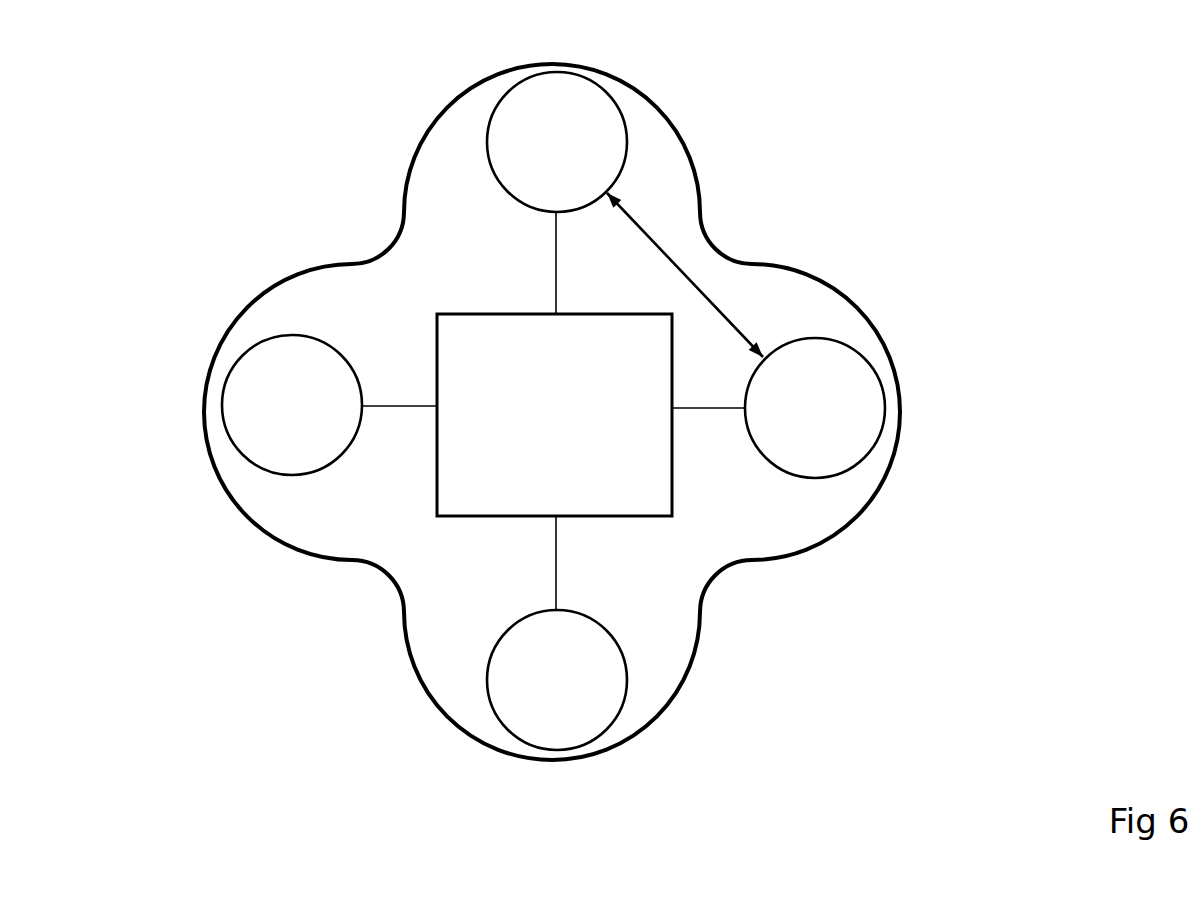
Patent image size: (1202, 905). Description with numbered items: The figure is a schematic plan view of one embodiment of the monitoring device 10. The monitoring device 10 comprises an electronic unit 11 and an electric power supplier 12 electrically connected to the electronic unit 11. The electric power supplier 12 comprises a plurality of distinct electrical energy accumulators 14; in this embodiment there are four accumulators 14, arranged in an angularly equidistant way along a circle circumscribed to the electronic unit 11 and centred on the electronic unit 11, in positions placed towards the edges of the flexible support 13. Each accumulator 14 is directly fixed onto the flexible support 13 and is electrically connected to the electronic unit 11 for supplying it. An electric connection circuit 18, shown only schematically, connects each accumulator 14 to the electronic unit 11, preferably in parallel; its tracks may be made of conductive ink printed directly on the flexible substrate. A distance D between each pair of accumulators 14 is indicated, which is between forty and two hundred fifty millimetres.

The monitoring device 10 is at (172, 190).
The electronic unit 11 is at (576, 436).
The electric power supplier 12 is at (637, 123).
The flexible support 13 is at (297, 528).
The electrical energy accumulator 14 is at (535, 157).
The electric connection circuit 18 is at (568, 572).